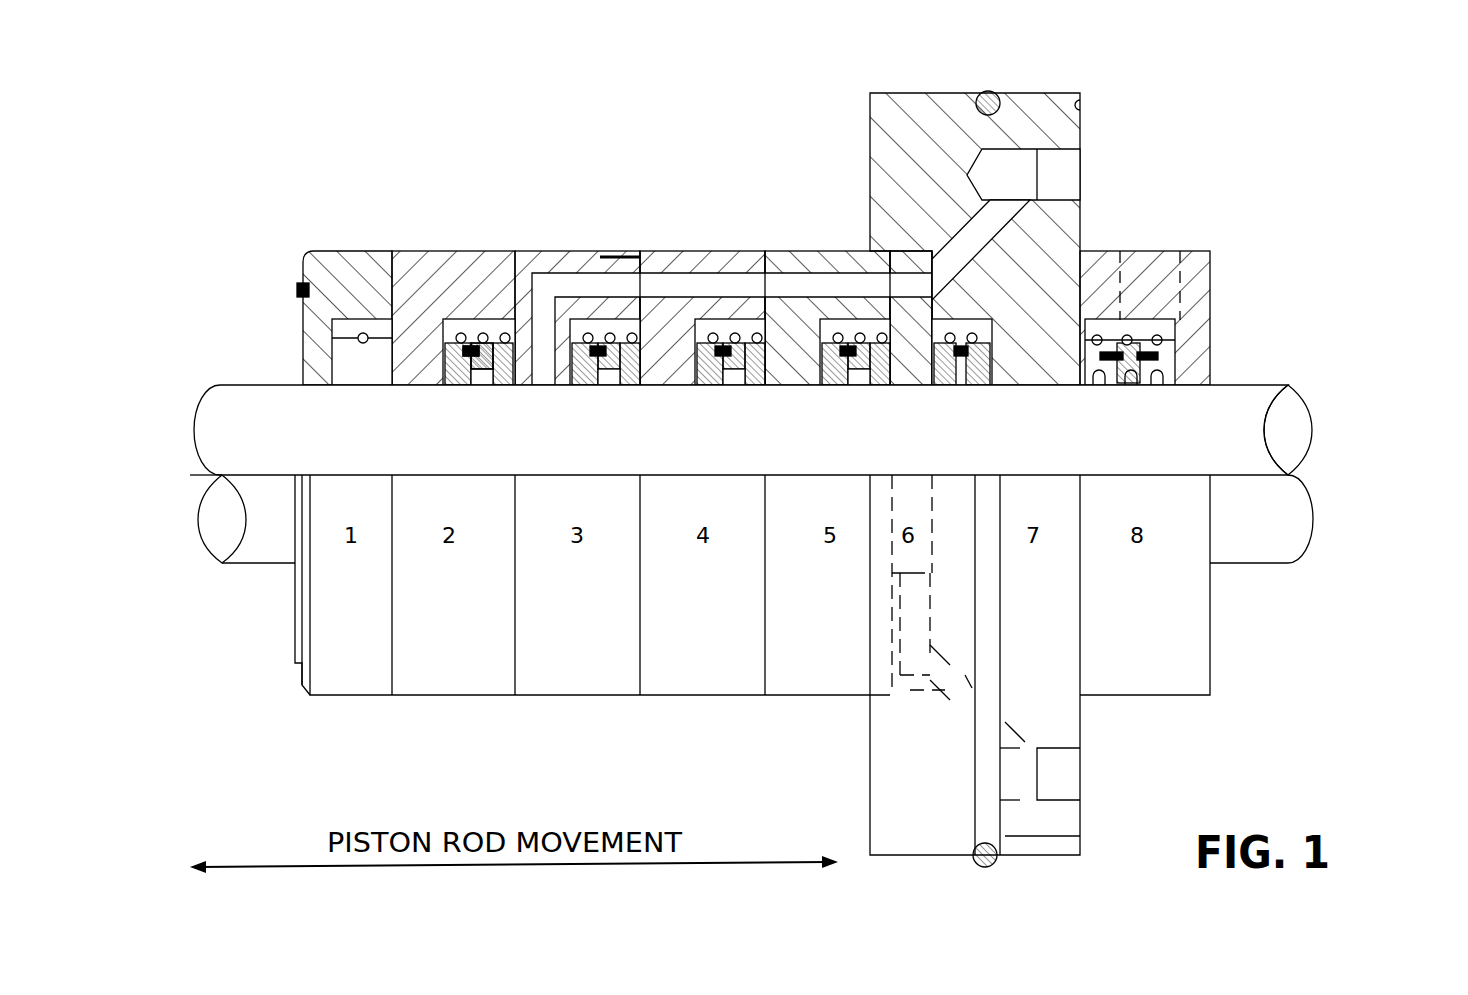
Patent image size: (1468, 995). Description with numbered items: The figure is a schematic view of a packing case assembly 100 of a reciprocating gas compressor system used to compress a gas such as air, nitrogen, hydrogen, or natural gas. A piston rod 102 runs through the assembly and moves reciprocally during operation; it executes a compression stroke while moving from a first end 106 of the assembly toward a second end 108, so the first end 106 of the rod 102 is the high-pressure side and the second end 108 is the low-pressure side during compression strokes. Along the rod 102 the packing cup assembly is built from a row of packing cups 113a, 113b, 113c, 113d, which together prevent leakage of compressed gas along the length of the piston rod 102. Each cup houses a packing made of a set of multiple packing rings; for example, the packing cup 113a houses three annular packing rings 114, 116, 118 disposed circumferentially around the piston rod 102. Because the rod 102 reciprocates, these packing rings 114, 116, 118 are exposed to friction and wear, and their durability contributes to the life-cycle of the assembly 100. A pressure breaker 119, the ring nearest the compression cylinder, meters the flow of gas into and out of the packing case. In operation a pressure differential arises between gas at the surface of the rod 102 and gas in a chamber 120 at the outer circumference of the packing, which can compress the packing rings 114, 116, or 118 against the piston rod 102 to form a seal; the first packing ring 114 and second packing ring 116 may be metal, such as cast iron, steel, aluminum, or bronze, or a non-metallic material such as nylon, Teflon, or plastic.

The packing case assembly 100 is at (1228, 133).
The piston rod 102 is at (622, 449).
The first end 106 is at (156, 495).
The second end 108 is at (1355, 521).
The packing cup 113a is at (430, 251).
The packing cup 113b is at (582, 251).
The packing cup 113c is at (720, 252).
The packing cup 113d is at (840, 252).
The first packing ring 114 is at (501, 260).
The second packing ring 116 is at (483, 327).
The packing ring 118 is at (535, 295).
The pressure breaker 119 is at (348, 355).
The chamber 120 is at (858, 370).